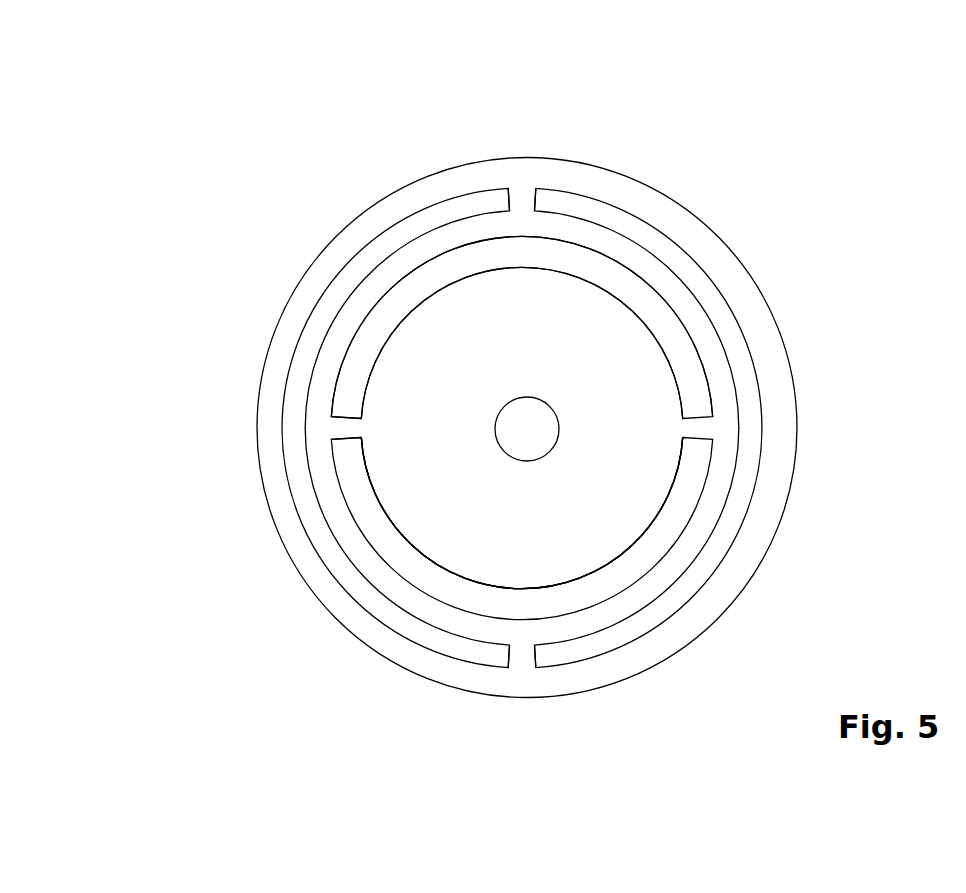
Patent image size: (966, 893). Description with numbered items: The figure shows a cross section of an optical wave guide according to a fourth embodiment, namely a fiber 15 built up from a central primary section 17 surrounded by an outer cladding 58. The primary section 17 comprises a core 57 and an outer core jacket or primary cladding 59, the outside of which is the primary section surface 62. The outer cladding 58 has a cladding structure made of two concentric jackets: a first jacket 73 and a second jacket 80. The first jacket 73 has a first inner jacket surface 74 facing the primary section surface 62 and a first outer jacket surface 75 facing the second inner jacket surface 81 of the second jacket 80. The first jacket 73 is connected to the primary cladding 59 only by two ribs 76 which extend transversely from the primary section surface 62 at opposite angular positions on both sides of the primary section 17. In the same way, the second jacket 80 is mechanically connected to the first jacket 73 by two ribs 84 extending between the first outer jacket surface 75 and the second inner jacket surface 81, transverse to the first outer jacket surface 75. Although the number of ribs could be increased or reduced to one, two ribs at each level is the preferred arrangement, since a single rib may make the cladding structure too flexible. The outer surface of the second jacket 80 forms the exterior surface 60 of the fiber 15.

The fiber 15 is at (130, 200).
The primary section 17 is at (578, 310).
The core 57 is at (543, 457).
The outer cladding 58 is at (520, 645).
The primary cladding 59 is at (460, 548).
The exterior surface 60 is at (424, 180).
The primary section surface 62 is at (400, 534).
The first jacket 73 is at (322, 385).
The first inner jacket surface 74 is at (346, 484).
The first outer jacket surface 75 is at (320, 342).
The ribs 76 is at (348, 423).
The second jacket 80 is at (377, 232).
The second inner jacket surface 81 is at (345, 283).
The ribs 84 is at (523, 197).